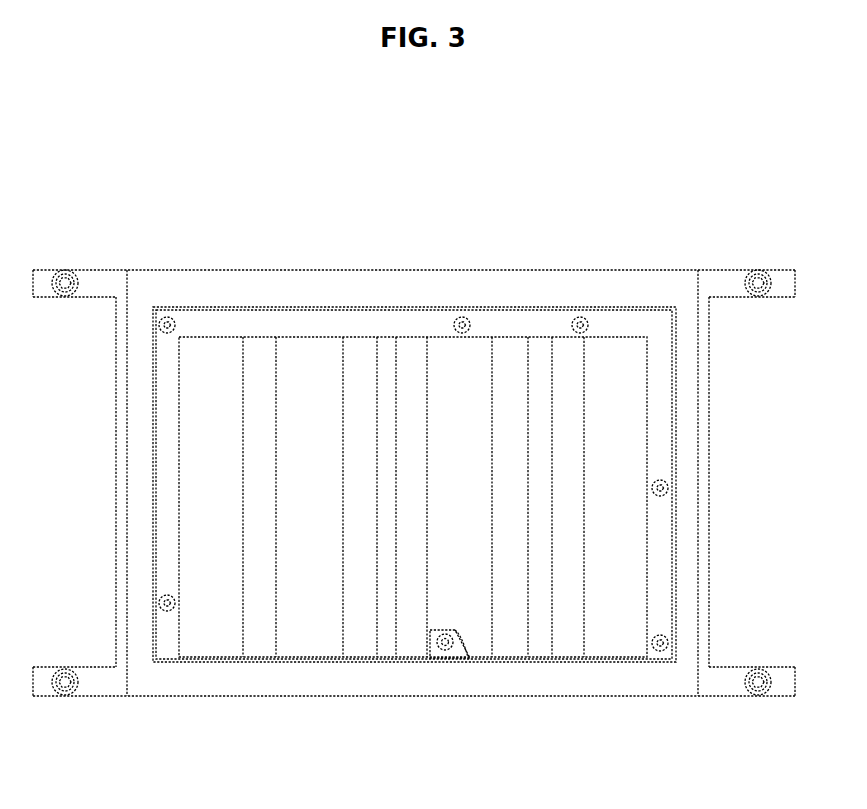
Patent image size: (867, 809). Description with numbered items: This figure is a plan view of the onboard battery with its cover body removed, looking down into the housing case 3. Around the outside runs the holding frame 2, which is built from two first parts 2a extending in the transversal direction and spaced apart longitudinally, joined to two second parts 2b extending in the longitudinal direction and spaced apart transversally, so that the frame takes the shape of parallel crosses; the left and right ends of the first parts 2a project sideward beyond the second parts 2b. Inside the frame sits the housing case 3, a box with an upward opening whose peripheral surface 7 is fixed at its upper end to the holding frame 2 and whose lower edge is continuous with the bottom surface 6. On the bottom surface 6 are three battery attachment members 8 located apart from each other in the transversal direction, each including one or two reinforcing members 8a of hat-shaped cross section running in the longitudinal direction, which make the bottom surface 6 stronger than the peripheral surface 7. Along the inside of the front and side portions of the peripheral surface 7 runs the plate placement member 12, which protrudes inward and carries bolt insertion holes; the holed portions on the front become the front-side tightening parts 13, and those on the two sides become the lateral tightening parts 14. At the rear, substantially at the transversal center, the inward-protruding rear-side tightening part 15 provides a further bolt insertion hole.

The holding frame 2 is at (720, 275).
The first part 2a is at (782, 275).
The second part 2b is at (115, 450).
The housing case 3 is at (541, 685).
The bottom surface 6 is at (322, 350).
The peripheral surface 7 is at (605, 684).
The battery attachment member 8 is at (360, 345).
The reinforcing member 8a is at (262, 345).
The plate placement member 12 is at (540, 320).
The front-side tightening part 13 is at (177, 318).
The lateral tightening part 14 is at (158, 597).
The rear-side tightening part 15 is at (460, 660).